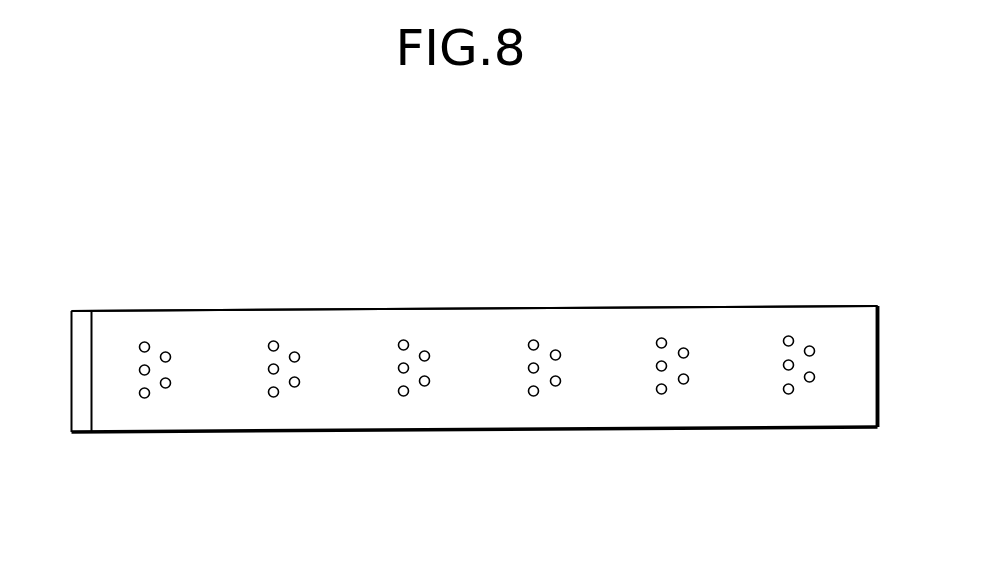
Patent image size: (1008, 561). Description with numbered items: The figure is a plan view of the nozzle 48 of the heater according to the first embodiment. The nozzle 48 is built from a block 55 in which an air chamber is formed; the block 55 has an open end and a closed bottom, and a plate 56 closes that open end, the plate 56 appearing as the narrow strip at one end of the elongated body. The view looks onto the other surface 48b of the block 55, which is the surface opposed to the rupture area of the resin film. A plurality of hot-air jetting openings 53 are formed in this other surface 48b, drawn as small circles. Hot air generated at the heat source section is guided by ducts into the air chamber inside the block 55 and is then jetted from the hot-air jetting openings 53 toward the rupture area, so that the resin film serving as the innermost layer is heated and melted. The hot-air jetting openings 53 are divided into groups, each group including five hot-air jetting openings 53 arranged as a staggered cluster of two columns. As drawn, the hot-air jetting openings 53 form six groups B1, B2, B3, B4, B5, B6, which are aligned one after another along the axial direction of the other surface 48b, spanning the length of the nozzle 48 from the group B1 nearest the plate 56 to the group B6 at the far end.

The nozzle 48 is at (714, 298).
The other surface 48b is at (850, 322).
The block 55 is at (484, 307).
The plate 56 is at (82, 308).
The hot-air jetting openings 53 is at (146, 338).
The group of hot-air jetting openings B1 is at (156, 402).
The group of hot-air jetting openings B2 is at (280, 398).
The group of hot-air jetting openings B3 is at (410, 397).
The group of hot-air jetting openings B4 is at (540, 397).
The group of hot-air jetting openings B5 is at (668, 395).
The group of hot-air jetting openings B6 is at (796, 395).